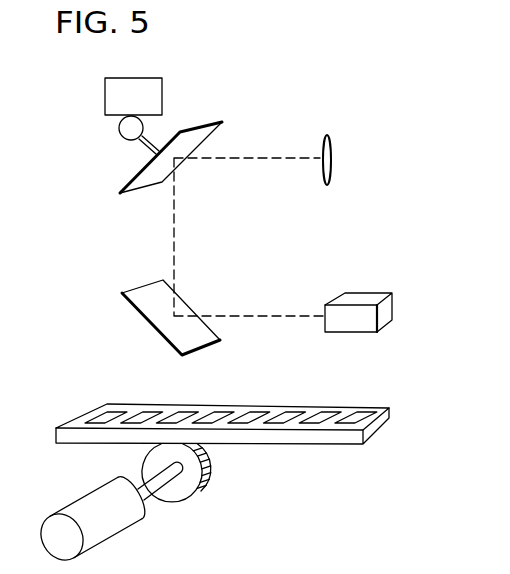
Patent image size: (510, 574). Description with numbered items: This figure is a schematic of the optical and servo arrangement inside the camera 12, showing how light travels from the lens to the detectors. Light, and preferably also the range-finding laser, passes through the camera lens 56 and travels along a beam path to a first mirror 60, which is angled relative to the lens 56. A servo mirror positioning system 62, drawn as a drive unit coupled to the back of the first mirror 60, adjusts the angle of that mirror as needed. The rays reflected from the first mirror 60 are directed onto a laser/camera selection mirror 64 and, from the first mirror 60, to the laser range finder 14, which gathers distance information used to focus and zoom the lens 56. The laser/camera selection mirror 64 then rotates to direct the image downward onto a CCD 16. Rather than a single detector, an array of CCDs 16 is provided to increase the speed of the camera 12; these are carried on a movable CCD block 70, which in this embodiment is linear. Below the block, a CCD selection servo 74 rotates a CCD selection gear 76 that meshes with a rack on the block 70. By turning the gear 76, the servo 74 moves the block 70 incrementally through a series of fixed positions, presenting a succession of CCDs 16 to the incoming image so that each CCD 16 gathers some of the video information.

The camera 12 is at (416, 173).
The range finder 14 is at (360, 298).
The CCD 16 is at (217, 410).
The camera lens 56 is at (332, 155).
The first mirror 60 is at (207, 132).
The servo mirror positioning system 62 is at (162, 100).
The laser/camera selection mirror 64 is at (140, 293).
The CCD block 70 is at (378, 425).
The CCD selection servo 74 is at (90, 500).
The CCD selection gear 76 is at (187, 493).